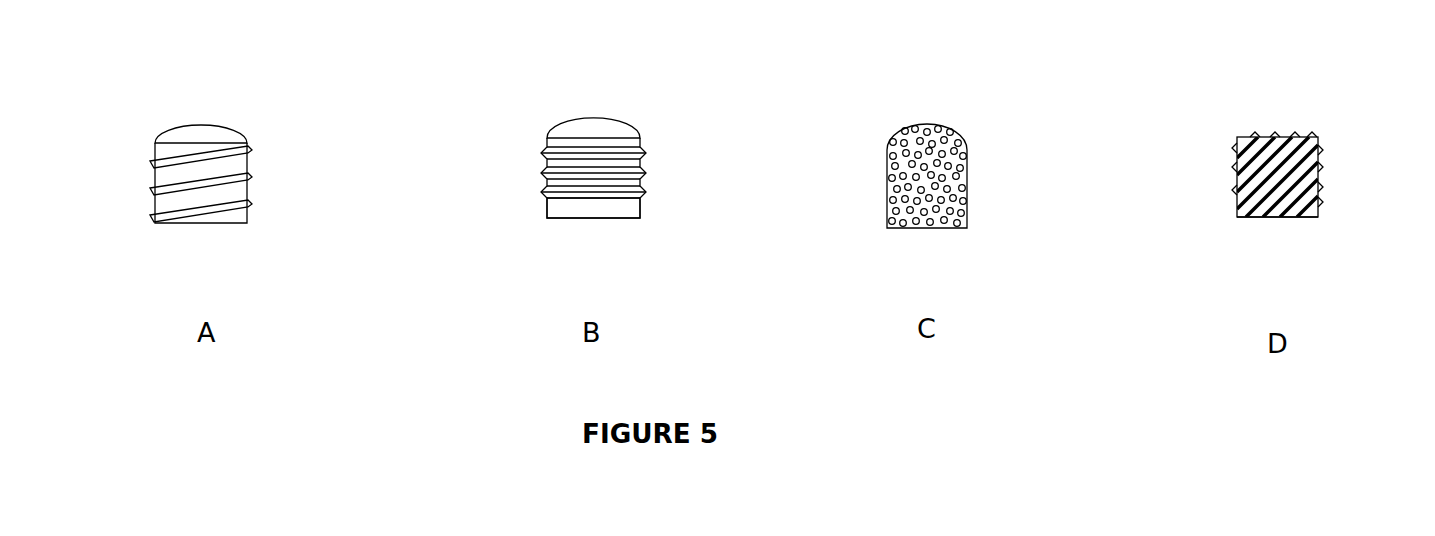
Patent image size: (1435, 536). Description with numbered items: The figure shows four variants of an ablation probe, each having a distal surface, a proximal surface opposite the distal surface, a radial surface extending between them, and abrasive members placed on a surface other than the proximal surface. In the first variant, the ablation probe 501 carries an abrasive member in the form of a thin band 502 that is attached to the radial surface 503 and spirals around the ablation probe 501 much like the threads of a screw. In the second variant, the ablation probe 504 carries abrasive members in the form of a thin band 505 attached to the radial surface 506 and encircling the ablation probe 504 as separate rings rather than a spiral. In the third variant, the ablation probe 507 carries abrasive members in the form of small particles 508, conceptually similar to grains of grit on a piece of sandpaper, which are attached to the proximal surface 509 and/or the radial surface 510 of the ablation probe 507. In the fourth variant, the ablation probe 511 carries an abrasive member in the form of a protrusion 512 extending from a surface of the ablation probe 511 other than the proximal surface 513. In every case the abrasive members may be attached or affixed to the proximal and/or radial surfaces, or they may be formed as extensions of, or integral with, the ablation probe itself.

The ablation probe 501 is at (212, 177).
The thin band 502 is at (150, 165).
The radial surface 503 is at (150, 205).
The ablation probe 504 is at (604, 175).
The thin band 505 is at (547, 155).
The radial surface 506 is at (547, 205).
The ablation probe 507 is at (931, 159).
The small particle 508 is at (890, 156).
The proximal surface 509 is at (917, 130).
The radial surface 510 is at (887, 210).
The ablation probe 511 is at (1284, 204).
The protrusion 512 is at (1235, 170).
The proximal surface 513 is at (1272, 218).